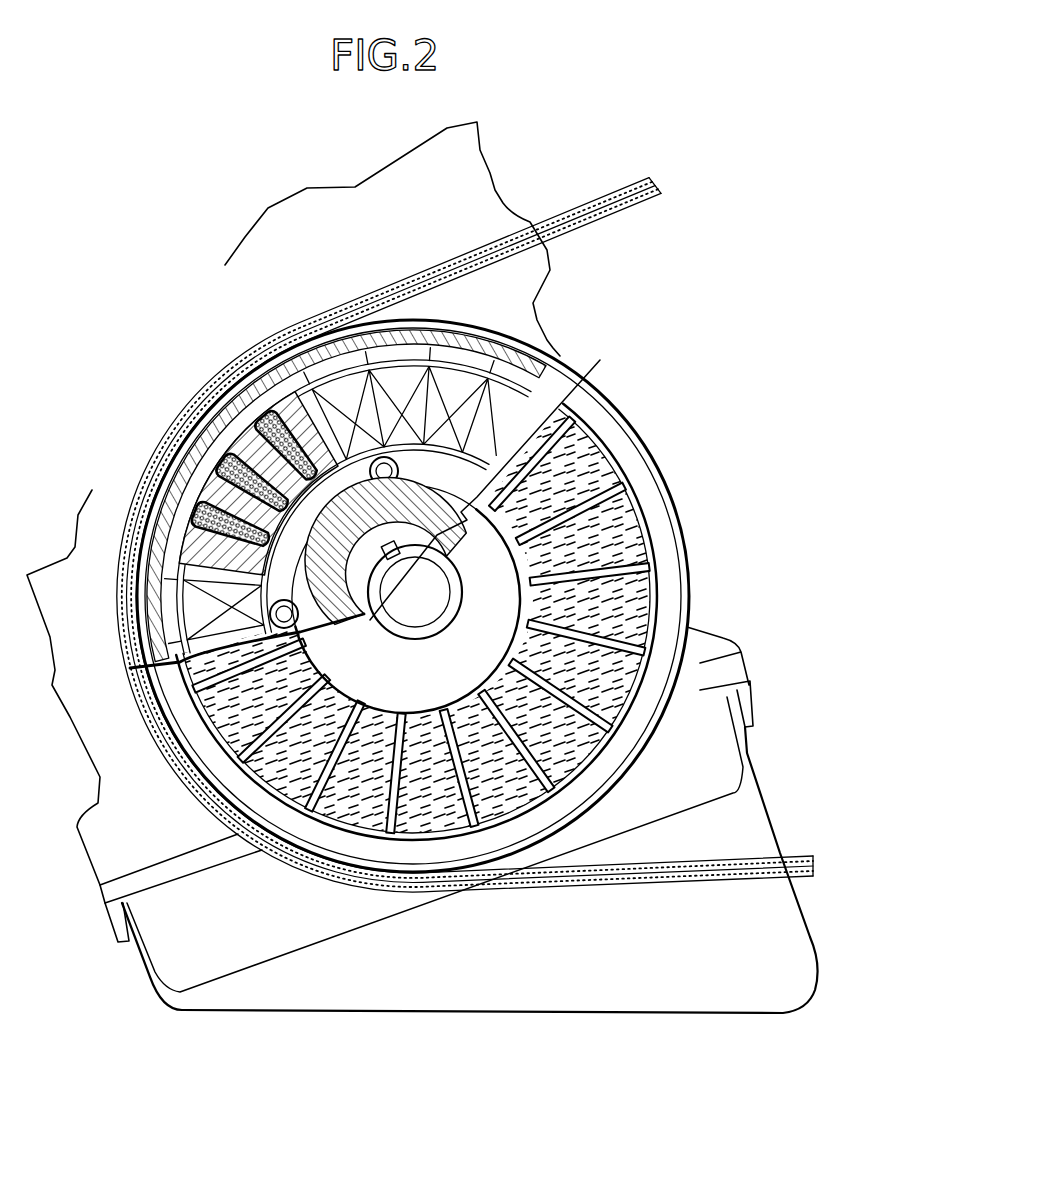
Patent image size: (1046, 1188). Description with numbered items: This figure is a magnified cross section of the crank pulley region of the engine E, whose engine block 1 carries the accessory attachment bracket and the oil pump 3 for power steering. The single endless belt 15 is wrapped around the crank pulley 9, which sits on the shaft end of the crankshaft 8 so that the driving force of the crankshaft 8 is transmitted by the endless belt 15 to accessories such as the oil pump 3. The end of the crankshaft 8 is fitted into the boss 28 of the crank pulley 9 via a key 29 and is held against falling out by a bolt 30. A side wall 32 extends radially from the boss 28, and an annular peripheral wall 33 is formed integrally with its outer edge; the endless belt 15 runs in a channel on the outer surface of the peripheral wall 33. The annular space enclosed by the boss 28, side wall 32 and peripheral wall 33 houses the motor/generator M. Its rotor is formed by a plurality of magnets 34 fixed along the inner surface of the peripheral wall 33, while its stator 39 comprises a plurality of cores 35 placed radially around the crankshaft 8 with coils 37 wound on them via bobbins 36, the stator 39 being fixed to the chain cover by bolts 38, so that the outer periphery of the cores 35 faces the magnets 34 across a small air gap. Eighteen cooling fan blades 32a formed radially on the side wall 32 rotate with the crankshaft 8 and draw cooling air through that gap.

The engine block 1 is at (494, 157).
The engine E is at (230, 242).
The motor/generator M is at (185, 396).
The oil pump 3 is at (712, 535).
The crankshaft 8 is at (338, 616).
The crank pulley 9 is at (457, 316).
The endless belt 15 is at (618, 190).
The boss 28 is at (375, 535).
The key 29 is at (404, 543).
The bolt 30 is at (421, 620).
The side wall 32 is at (637, 570).
The cooling fan blades 32a is at (622, 535).
The peripheral wall 33 is at (303, 326).
The magnets 34 is at (470, 328).
The cores 35 is at (372, 555).
The bobbins 36 is at (262, 392).
The coils 37 is at (416, 405).
The bolts 38 is at (400, 471).
The stator 39 is at (331, 388).